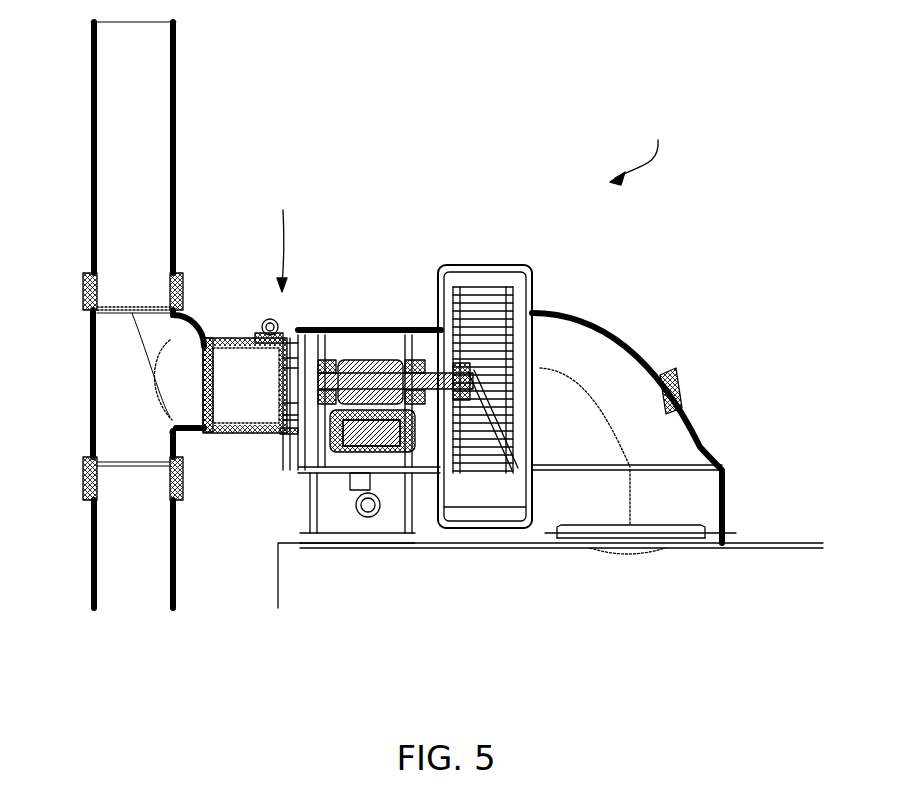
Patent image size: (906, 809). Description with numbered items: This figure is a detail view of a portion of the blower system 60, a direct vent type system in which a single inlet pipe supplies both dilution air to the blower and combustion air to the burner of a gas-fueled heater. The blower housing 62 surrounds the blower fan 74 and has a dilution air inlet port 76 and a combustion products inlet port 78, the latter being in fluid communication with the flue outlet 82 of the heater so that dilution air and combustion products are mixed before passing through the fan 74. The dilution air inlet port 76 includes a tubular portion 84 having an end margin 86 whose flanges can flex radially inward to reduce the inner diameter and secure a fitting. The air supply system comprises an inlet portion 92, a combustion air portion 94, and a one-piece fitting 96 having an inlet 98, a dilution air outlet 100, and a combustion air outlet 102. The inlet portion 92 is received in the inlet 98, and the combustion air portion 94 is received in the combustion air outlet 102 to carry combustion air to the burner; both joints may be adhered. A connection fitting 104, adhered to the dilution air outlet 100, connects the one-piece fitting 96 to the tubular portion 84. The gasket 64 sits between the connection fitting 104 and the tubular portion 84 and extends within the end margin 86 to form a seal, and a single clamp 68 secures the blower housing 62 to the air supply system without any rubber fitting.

The blower system 60 is at (640, 151).
The blower housing 62 is at (630, 348).
The gasket 64 is at (256, 333).
The clamp 68 is at (277, 322).
The blower fan 74 is at (488, 293).
The dilution air inlet port 76 is at (282, 239).
The combustion products inlet port 78 is at (713, 468).
The flue outlet 82 is at (665, 522).
The tubular portion 84 is at (300, 335).
The end margin 86 is at (275, 438).
The inlet portion 92 is at (121, 247).
The combustion air portion 94 is at (121, 545).
The one-piece fitting 96 is at (119, 395).
The inlet 98 is at (83, 290).
The dilution air outlet 100 is at (212, 340).
The combustion air outlet 102 is at (83, 478).
The connection fitting 104 is at (238, 395).